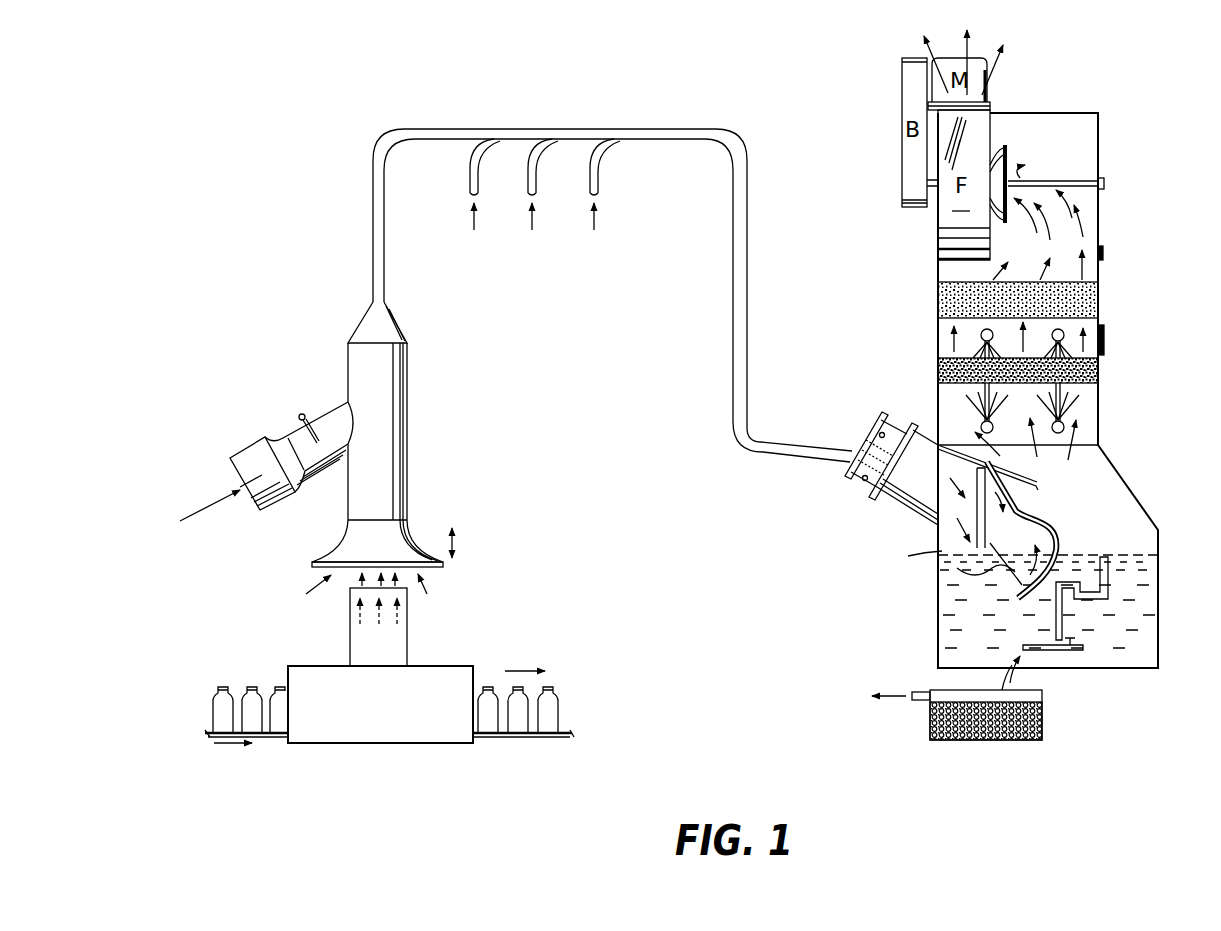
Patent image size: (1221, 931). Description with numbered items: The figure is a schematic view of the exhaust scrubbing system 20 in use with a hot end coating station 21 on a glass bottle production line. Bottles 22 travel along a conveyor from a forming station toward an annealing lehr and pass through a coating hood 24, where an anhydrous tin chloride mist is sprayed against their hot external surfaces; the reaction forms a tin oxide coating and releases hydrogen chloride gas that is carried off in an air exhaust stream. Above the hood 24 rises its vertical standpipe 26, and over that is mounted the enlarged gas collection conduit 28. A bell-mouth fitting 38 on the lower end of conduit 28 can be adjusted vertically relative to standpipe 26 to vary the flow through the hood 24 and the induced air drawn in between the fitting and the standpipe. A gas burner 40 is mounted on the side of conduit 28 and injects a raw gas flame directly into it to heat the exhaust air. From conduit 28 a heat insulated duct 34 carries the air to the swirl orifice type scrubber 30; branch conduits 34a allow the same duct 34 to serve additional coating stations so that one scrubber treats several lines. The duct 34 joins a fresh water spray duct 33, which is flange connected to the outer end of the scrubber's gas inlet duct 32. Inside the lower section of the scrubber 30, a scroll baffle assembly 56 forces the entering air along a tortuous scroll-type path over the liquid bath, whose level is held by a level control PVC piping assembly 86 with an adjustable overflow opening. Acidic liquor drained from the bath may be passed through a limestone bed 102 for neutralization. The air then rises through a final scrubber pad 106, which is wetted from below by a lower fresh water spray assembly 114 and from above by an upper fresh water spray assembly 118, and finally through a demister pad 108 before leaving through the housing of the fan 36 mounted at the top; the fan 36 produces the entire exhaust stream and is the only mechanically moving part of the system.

The exhaust scrubbing system 20 is at (327, 268).
The hot end coating station 21 is at (432, 752).
The bottles 22 is at (248, 690).
The coating hood 24 is at (390, 712).
The vertical standpipe 26 is at (404, 626).
The gas collection conduit 28 is at (410, 372).
The swirl orifice type scrubber 30 is at (1112, 352).
The gas inlet duct 32 is at (914, 507).
The fresh water spray duct 33 is at (885, 425).
The heat insulated duct 34 is at (727, 133).
The branch conduits 34a is at (590, 184).
The fan 36 is at (985, 142).
The bell-mouth fitting 38 is at (338, 550).
The gas burner 40 is at (250, 452).
The scroll baffle assembly 56 is at (1053, 518).
The level control PVC piping assembly 86 is at (1112, 594).
The limestone bed 102 is at (1043, 713).
The final scrubber pad 106 is at (1100, 378).
The demister pad 108 is at (1100, 296).
The lower fresh water spray assembly 114 is at (1068, 420).
The upper fresh water spray assembly 118 is at (977, 332).